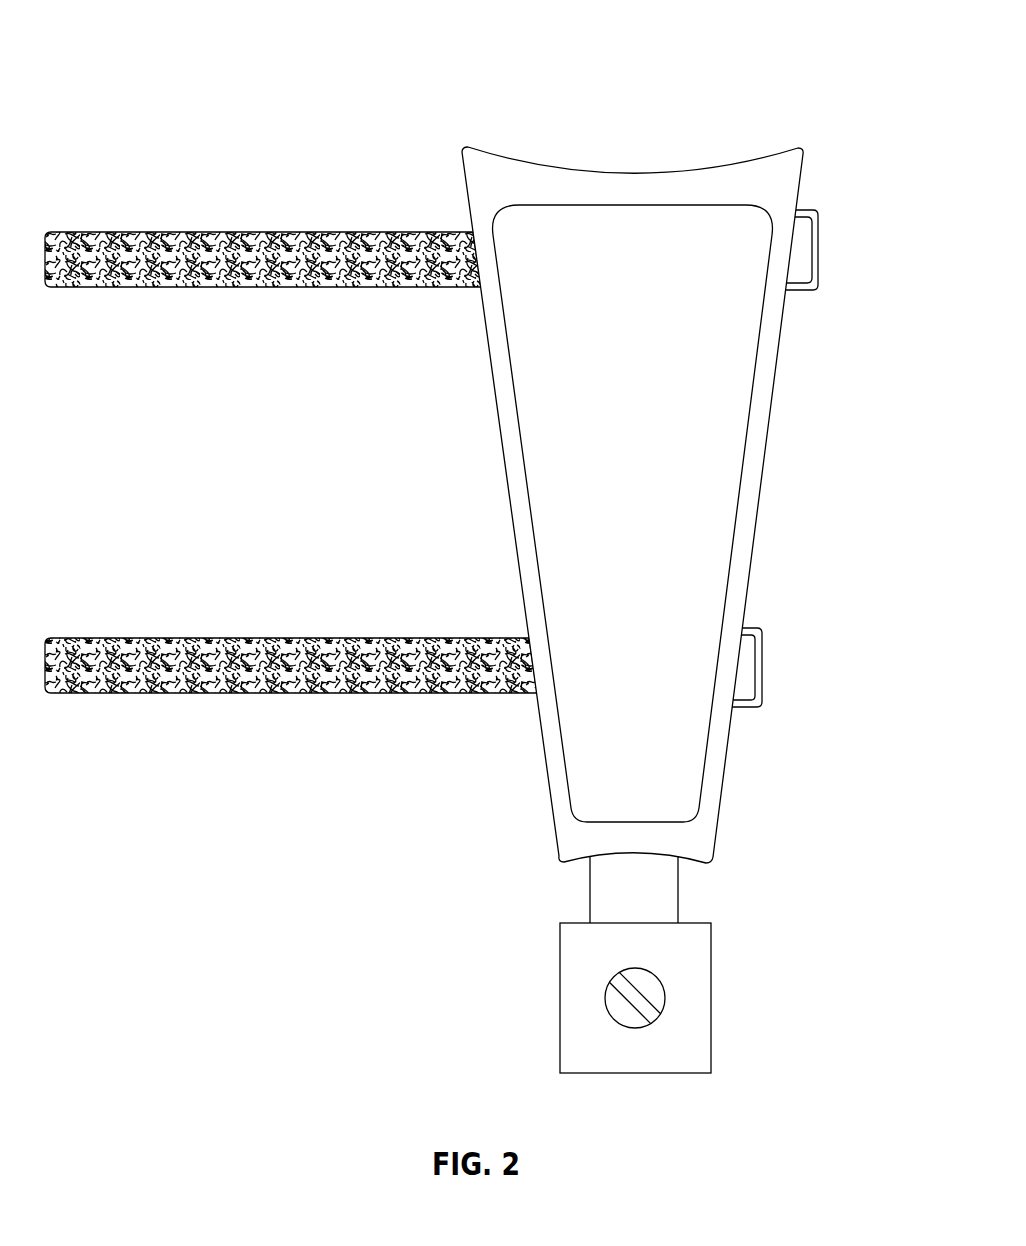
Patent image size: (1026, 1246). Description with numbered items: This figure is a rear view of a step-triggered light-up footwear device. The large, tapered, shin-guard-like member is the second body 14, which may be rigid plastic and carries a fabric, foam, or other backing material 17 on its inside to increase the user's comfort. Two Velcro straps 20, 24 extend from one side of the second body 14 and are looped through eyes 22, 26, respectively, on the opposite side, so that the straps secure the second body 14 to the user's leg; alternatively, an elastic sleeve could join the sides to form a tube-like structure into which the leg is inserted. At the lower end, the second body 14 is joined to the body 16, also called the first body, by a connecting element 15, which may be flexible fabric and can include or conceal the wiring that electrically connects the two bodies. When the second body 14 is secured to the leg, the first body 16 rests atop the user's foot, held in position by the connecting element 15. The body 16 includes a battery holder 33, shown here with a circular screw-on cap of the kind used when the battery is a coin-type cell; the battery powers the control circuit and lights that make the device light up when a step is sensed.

The second body 14 is at (697, 168).
The connecting element 15 is at (588, 890).
The body 16 is at (558, 982).
The backing material 17 is at (758, 357).
The Velcro strap 20 is at (337, 233).
The eye 22 is at (818, 252).
The Velcro strap 24 is at (337, 638).
The eye 26 is at (763, 657).
The battery holder 33 is at (668, 997).